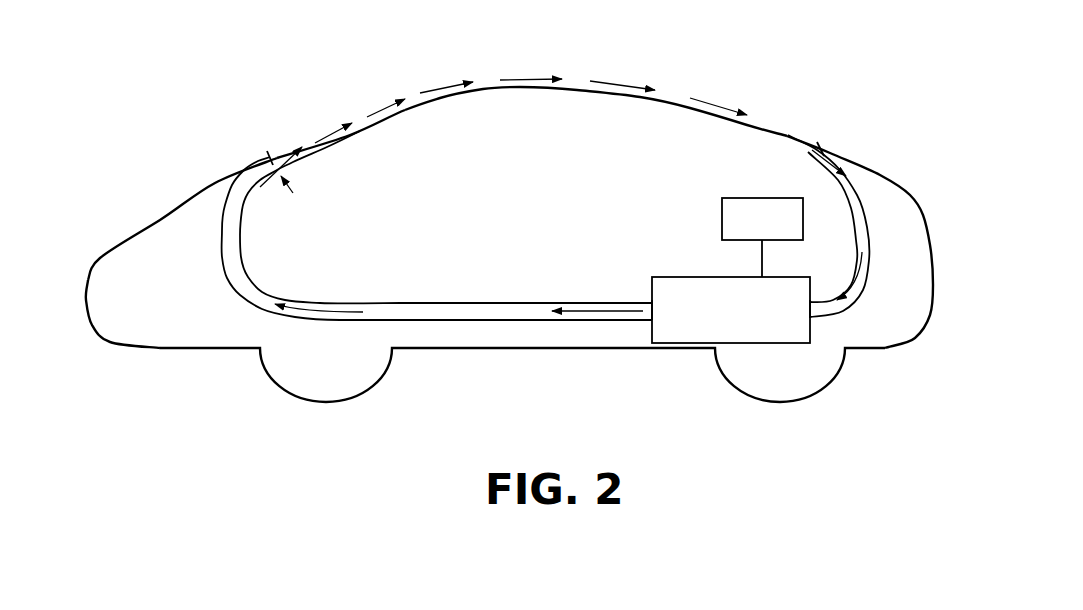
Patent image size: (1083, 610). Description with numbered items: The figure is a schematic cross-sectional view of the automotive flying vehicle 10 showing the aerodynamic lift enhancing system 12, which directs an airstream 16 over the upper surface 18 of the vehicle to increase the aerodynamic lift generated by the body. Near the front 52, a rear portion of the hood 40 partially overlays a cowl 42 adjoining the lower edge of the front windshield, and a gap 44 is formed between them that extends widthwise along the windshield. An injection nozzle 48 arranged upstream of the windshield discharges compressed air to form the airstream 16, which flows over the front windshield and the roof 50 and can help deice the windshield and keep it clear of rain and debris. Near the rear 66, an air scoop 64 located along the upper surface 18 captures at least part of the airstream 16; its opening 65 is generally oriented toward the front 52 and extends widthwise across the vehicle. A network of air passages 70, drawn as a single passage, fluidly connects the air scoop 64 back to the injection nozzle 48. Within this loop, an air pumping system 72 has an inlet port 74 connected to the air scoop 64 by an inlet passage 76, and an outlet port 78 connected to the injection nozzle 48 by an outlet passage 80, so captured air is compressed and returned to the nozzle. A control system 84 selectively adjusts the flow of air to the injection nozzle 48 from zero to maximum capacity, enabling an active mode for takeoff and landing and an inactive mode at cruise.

The automotive flying vehicle 10 is at (526, 232).
The aerodynamic lift enhancing system 12 is at (450, 333).
The airstream 16 is at (322, 138).
The upper surface 18 is at (483, 89).
The rear portion of the hood 40 is at (262, 161).
The cowl 42 is at (246, 195).
The gap 44 is at (268, 152).
The injection nozzle 48 is at (300, 162).
The roof 50 is at (572, 89).
The front 52 is at (88, 280).
The air scoop 64 is at (820, 148).
The opening 65 is at (808, 157).
The rear 66 is at (933, 285).
The air passages 70 is at (223, 252).
The air pumping system 72 is at (668, 277).
The inlet port 74 is at (806, 313).
The inlet passage 76 is at (868, 212).
The outlet port 78 is at (654, 310).
The outlet passage 80 is at (455, 303).
The control system 84 is at (722, 220).